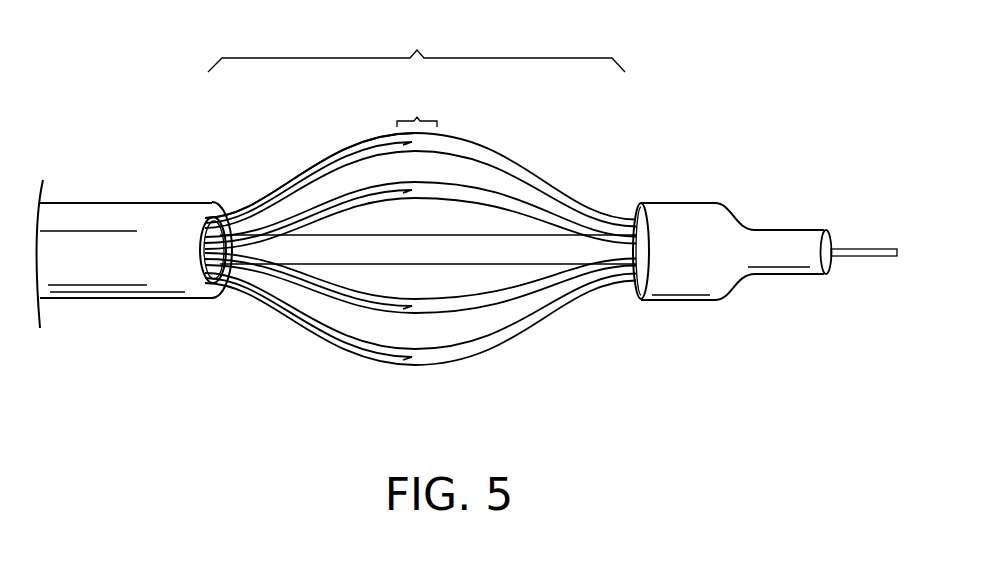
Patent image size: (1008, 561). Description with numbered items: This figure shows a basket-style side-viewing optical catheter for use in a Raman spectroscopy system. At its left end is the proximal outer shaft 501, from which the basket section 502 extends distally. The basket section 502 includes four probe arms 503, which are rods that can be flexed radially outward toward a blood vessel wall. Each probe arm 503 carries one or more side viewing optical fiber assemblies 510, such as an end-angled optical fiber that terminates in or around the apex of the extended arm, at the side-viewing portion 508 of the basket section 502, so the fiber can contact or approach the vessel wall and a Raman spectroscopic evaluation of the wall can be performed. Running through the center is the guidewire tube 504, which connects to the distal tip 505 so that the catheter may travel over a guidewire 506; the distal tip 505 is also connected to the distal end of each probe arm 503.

The proximal outer shaft 501 is at (113, 202).
The basket section 502 is at (416, 47).
The probe arms 503 is at (330, 152).
The guidewire tube 504 is at (442, 248).
The distal tip 505 is at (765, 228).
The guidewire 506 is at (868, 247).
The side-viewing portion 508 is at (417, 107).
The side viewing optical fiber assemblies 510 is at (280, 192).